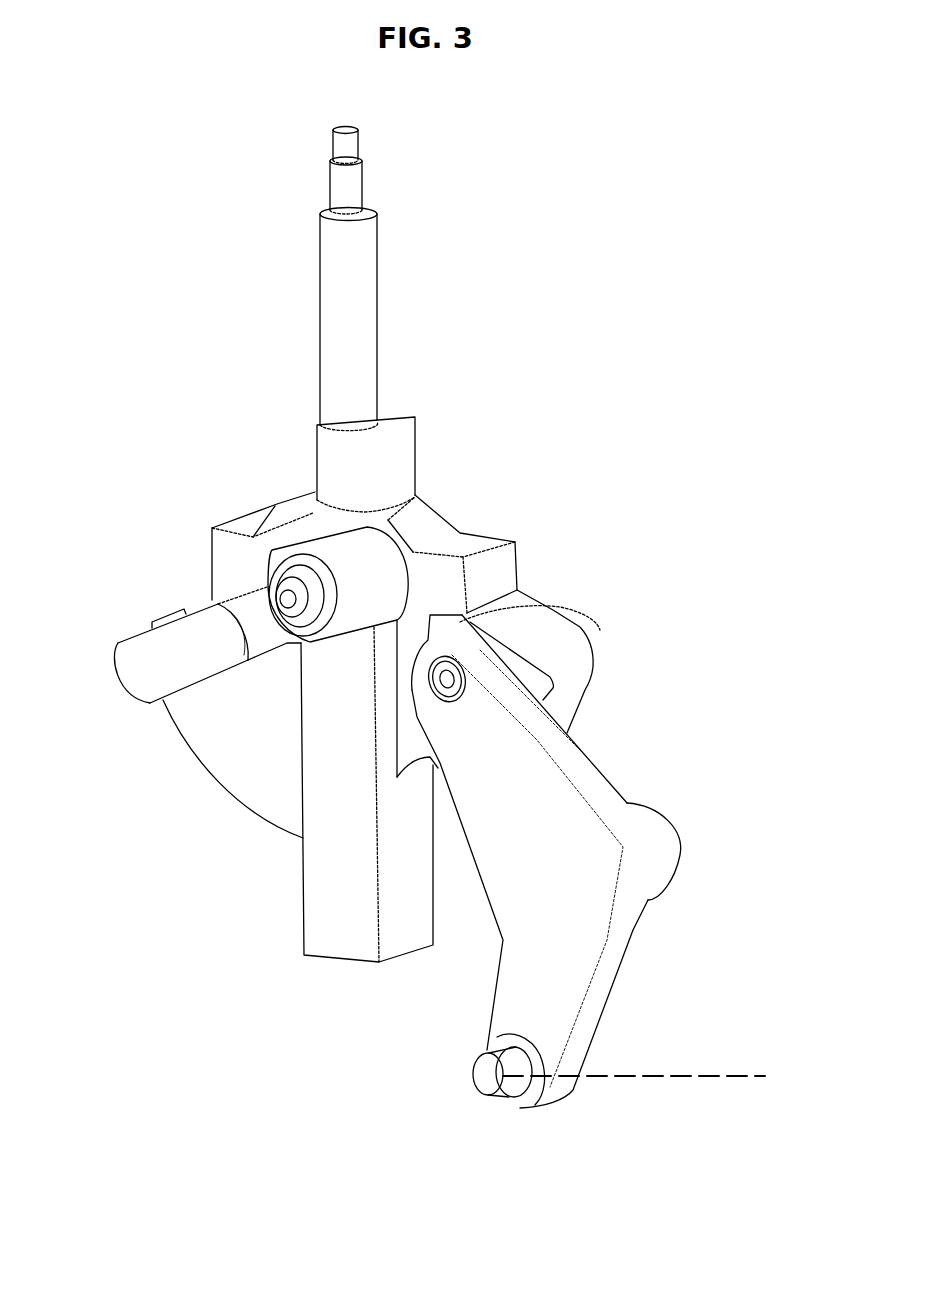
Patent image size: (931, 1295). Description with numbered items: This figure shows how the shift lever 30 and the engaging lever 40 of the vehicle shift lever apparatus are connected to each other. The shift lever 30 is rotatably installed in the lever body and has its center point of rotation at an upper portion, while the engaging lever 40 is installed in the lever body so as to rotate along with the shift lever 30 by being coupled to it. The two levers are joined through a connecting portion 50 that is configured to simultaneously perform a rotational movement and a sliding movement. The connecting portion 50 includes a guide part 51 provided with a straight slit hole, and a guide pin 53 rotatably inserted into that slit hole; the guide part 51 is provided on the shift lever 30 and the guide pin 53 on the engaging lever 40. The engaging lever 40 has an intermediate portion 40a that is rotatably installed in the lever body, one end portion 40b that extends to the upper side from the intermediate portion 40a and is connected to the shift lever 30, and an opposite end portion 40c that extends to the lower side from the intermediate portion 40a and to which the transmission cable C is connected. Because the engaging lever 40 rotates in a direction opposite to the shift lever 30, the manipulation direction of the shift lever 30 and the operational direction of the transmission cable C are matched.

The shift lever 30 is at (500, 565).
The engaging lever 40 is at (582, 942).
The intermediate portion 40a is at (597, 860).
The one end portion 40b is at (440, 717).
The opposite end portion 40c is at (548, 1043).
The connecting portion 50 is at (657, 563).
The guide part 51 is at (545, 688).
The guide pin 53 is at (455, 668).
The transmission cable C is at (670, 1079).